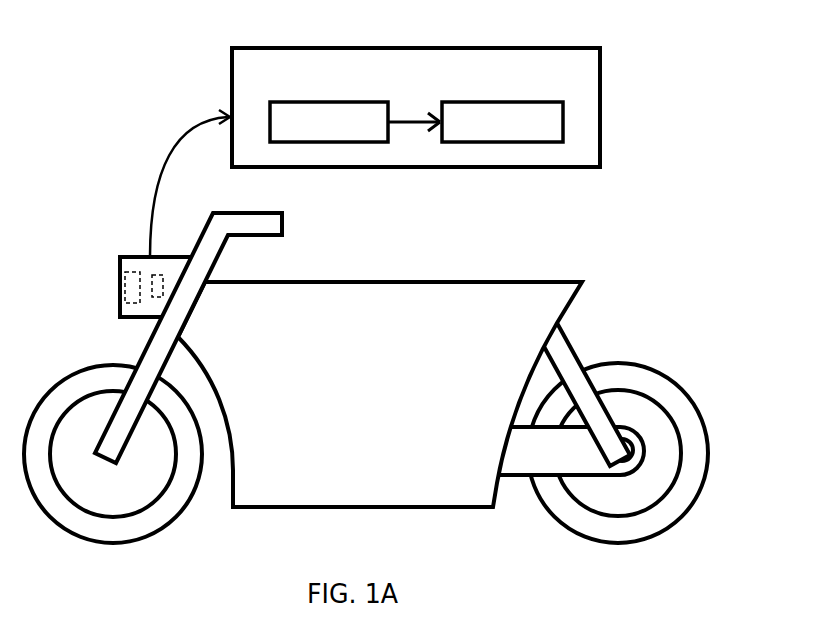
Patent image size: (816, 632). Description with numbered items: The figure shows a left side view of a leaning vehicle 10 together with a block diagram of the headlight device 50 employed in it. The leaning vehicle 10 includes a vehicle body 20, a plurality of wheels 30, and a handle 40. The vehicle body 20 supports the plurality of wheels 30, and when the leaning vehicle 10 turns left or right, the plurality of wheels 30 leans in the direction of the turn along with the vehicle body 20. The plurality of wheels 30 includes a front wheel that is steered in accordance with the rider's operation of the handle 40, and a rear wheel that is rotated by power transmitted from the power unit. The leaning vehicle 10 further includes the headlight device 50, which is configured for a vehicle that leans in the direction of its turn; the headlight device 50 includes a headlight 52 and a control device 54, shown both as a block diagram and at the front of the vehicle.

The leaning vehicle 10 is at (583, 274).
The vehicle body 20 is at (483, 280).
The wheels 30 is at (182, 510).
The handle 40 is at (285, 218).
The headlight device 50 is at (412, 47).
The headlight 52 is at (479, 142).
The control device 54 is at (308, 142).